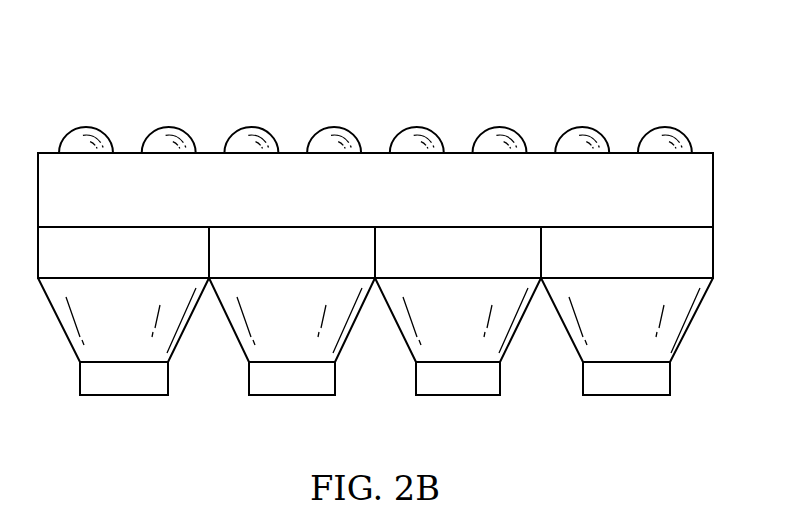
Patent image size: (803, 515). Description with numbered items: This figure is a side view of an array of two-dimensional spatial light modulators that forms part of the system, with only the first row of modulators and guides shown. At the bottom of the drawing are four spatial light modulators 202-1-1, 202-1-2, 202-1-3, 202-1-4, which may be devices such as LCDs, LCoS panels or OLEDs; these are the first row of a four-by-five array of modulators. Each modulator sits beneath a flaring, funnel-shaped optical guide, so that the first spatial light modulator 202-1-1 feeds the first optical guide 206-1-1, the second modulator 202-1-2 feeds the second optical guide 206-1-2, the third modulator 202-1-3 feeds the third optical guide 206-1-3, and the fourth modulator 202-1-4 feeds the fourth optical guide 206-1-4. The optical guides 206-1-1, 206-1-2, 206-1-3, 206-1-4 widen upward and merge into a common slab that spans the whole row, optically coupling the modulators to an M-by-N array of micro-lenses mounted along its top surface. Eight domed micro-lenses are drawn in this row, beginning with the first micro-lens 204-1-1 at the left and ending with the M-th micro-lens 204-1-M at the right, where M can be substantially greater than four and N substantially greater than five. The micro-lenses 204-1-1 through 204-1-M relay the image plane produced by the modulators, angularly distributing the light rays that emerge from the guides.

The micro-lens 204-1-1 is at (87, 125).
The micro-lens 204-1-M is at (665, 125).
The optical guide 206-1-1 is at (123, 252).
The optical guide 206-1-2 is at (292, 252).
The optical guide 206-1-3 is at (458, 252).
The optical guide 206-1-4 is at (627, 252).
The spatial light modulator 202-1-1 is at (125, 395).
The spatial light modulator 202-1-2 is at (294, 395).
The spatial light modulator 202-1-3 is at (457, 395).
The spatial light modulator 202-1-4 is at (625, 395).